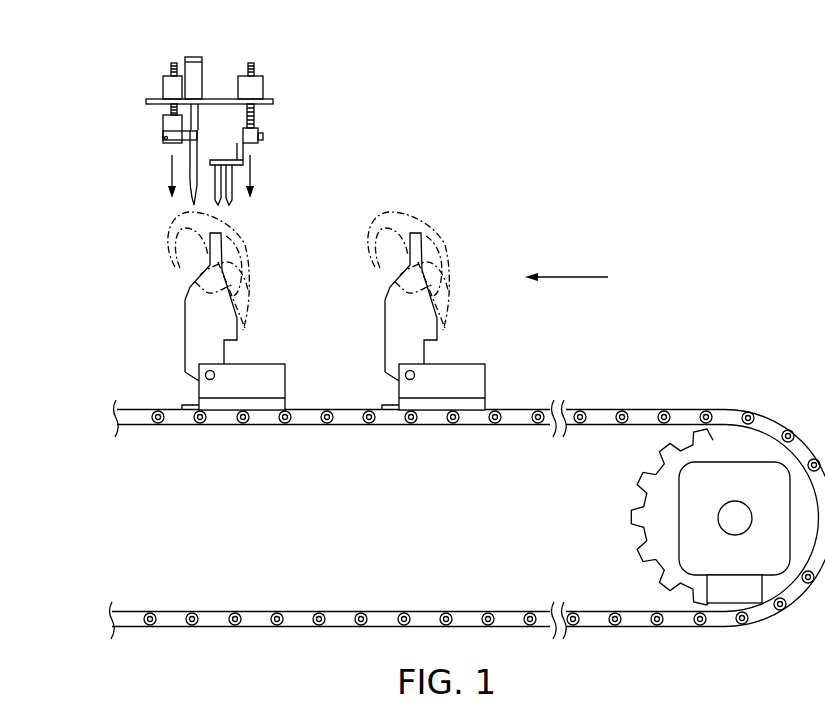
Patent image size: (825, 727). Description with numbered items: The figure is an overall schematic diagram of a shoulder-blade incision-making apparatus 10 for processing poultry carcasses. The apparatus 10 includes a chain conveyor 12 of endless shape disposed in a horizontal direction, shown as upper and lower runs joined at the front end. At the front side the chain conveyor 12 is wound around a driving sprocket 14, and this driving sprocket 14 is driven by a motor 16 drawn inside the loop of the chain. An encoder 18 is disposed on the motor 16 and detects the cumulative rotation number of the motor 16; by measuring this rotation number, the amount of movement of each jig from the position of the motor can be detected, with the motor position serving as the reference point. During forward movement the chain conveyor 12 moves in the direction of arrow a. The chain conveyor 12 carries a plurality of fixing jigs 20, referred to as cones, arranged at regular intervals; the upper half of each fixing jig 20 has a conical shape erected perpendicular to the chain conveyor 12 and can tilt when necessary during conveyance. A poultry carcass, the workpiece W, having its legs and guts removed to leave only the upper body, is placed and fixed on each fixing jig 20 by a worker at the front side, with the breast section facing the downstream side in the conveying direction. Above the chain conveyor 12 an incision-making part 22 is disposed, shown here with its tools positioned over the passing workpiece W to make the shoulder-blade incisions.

The shoulder-blade incision-making apparatus 10 is at (500, 135).
The chain conveyor 12 is at (317, 410).
The driving sprocket 14 is at (628, 495).
The motor 16 is at (686, 535).
The encoder 18 is at (727, 593).
The fixing jig 20 is at (185, 321).
The incision-making part 22 is at (274, 78).
The workpiece W is at (240, 248).
The direction of arrow a is at (568, 277).